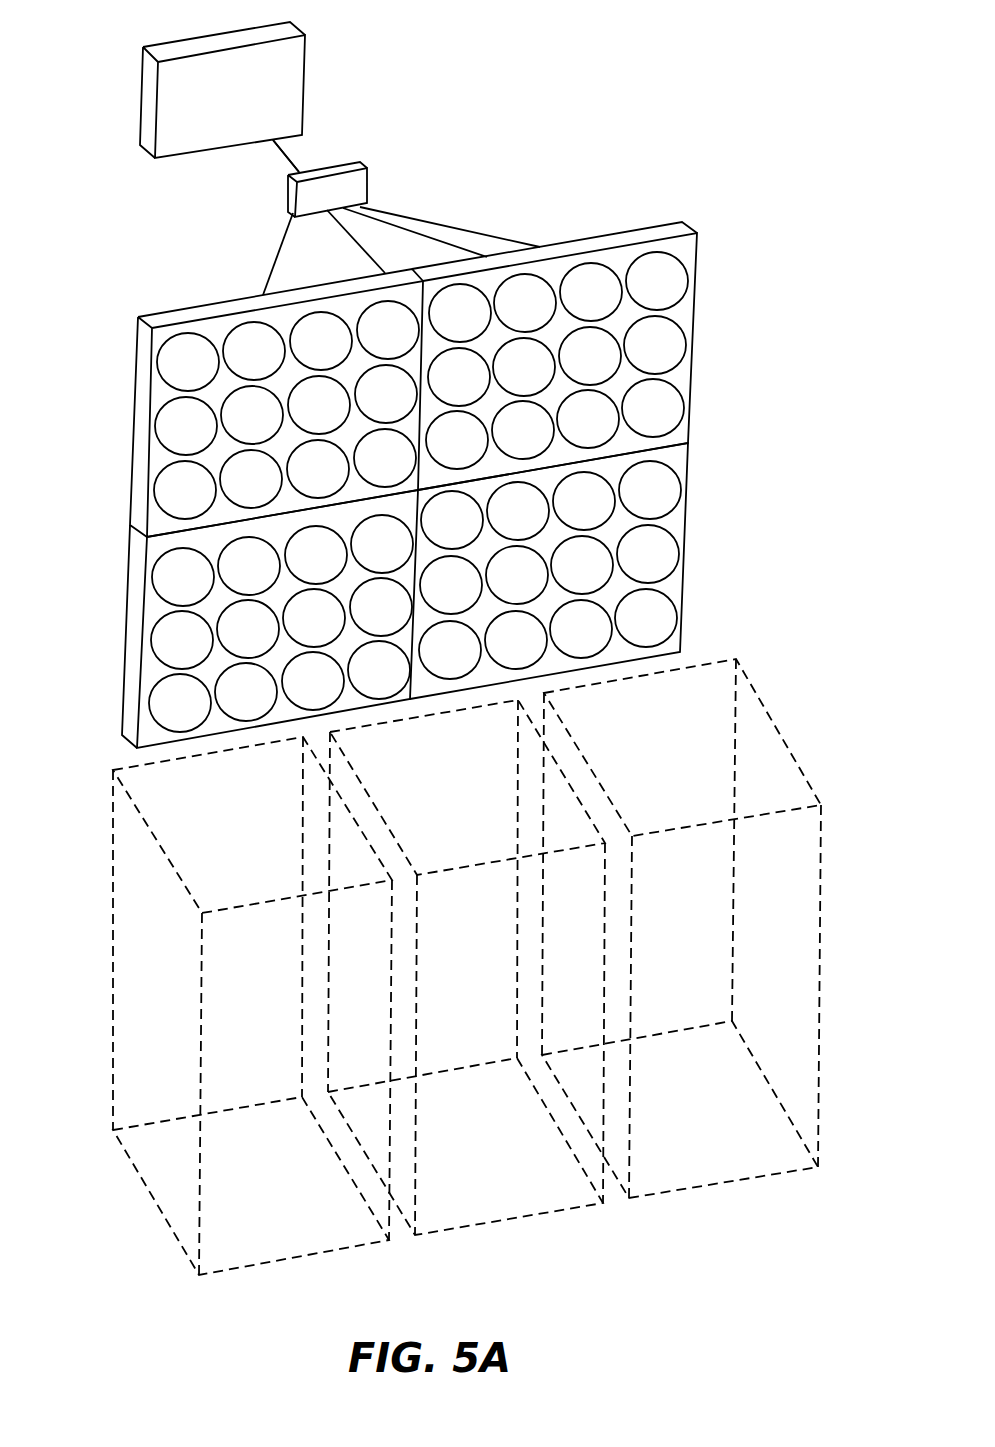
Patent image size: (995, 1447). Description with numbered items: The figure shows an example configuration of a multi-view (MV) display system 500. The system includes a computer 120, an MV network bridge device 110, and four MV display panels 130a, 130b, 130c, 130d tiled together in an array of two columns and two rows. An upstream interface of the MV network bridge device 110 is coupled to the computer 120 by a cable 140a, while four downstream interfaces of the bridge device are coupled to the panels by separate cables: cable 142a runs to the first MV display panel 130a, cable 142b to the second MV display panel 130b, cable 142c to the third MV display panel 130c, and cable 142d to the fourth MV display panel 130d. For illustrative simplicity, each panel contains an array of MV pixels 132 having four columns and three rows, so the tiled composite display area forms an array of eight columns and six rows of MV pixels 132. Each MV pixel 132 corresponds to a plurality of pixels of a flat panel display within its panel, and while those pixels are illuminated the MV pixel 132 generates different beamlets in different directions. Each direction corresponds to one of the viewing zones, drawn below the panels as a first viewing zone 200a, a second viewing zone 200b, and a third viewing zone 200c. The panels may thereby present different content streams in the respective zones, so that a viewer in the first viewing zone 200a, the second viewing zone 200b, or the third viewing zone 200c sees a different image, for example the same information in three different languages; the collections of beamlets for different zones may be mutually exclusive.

The MV display system 500 is at (806, 51).
The computer 120 is at (177, 87).
The MV network bridge device 110 is at (302, 187).
The cable 140a is at (303, 167).
The cable 142a is at (283, 248).
The cable 142b is at (478, 230).
The cable 142c is at (357, 256).
The cable 142d is at (434, 245).
The first MV display panel 130a is at (130, 423).
The second MV display panel 130b is at (700, 334).
The third MV display panel 130c is at (127, 635).
The fourth MV display panel 130d is at (697, 547).
The MV pixel 132 is at (167, 465).
The first viewing zone 200a is at (277, 1262).
The second viewing zone 200b is at (490, 1222).
The third viewing zone 200c is at (704, 1191).